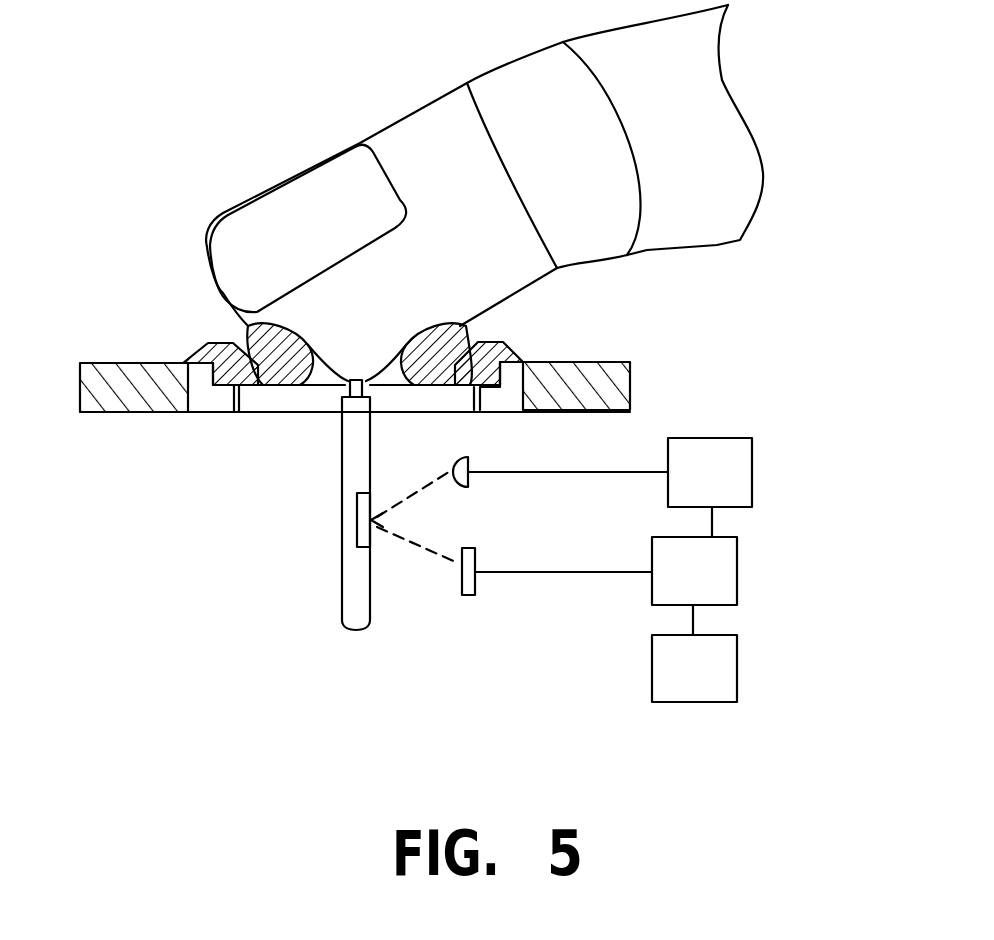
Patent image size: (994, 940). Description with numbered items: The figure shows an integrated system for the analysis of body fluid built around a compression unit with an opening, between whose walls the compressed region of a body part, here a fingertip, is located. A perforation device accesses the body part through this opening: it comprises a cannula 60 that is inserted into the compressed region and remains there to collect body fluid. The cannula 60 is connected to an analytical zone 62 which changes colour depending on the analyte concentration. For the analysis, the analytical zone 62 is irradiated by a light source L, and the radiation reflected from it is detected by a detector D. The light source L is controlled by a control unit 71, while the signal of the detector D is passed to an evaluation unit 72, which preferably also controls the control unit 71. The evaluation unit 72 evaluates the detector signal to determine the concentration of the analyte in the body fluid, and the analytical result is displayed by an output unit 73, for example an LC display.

The cannula 60 is at (348, 386).
The analytical zone 62 is at (357, 512).
The control unit 71 is at (710, 472).
The evaluation unit 72 is at (694, 571).
The output unit 73 is at (694, 668).
The light source L is at (470, 480).
The detector D is at (475, 585).